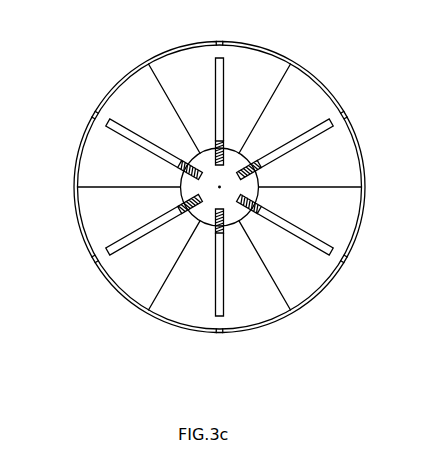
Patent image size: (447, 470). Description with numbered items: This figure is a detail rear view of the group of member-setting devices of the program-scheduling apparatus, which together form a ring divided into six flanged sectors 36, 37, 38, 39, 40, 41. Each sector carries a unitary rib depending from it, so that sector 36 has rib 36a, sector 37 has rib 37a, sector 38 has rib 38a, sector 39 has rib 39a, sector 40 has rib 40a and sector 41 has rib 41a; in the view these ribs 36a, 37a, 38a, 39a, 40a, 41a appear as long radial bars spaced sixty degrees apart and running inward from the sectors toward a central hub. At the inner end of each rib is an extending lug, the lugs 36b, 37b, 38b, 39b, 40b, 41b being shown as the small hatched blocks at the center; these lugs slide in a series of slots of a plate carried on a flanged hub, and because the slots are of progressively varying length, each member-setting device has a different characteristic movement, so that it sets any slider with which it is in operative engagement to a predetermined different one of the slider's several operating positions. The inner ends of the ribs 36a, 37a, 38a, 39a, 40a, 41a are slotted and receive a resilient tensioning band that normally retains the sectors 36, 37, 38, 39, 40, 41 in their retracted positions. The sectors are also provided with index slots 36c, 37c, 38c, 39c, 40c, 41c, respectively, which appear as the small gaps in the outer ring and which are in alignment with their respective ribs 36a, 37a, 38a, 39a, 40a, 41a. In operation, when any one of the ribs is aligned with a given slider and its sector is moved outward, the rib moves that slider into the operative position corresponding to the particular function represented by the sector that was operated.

The flanged sector 36 is at (191, 329).
The depending rib 36a is at (225, 268).
The extending lug 36b is at (215, 226).
The index slot 36c is at (222, 336).
The flanged sector 37 is at (82, 215).
The depending rib 37a is at (126, 246).
The extending lug 37b is at (185, 206).
The index slot 37c is at (95, 262).
The flanged sector 38 is at (113, 108).
The depending rib 38a is at (118, 134).
The extending lug 38b is at (188, 164).
The index slot 38c is at (95, 116).
The flanged sector 39 is at (190, 52).
The depending rib 39a is at (224, 98).
The extending lug 39b is at (226, 150).
The index slot 39c is at (222, 41).
The flanged sector 40 is at (347, 160).
The depending rib 40a is at (291, 141).
The extending lug 40b is at (257, 170).
The index slot 40c is at (342, 115).
The flanged sector 41 is at (312, 290).
The depending rib 41a is at (321, 241).
The extending lug 41b is at (257, 213).
The index slot 41c is at (346, 261).